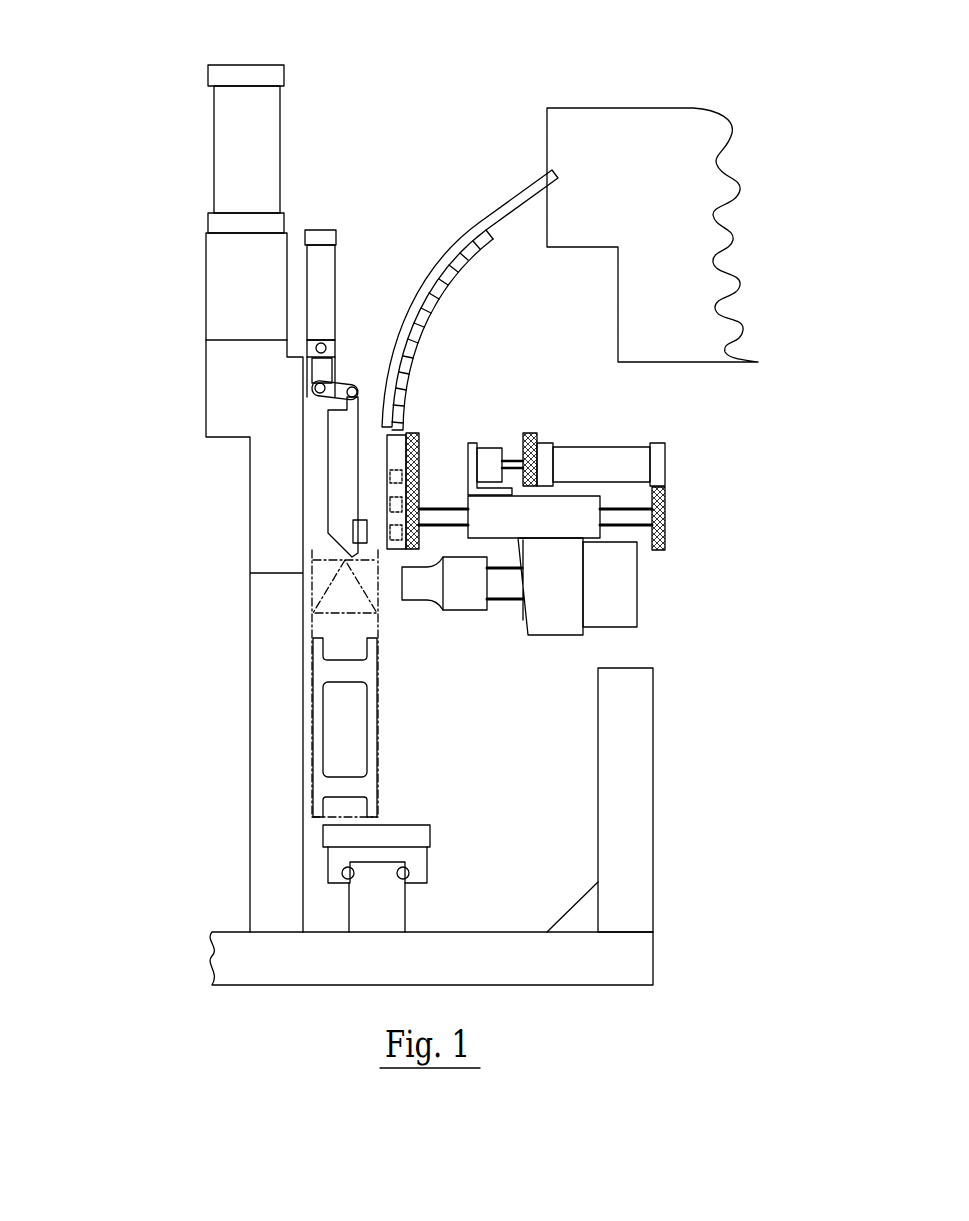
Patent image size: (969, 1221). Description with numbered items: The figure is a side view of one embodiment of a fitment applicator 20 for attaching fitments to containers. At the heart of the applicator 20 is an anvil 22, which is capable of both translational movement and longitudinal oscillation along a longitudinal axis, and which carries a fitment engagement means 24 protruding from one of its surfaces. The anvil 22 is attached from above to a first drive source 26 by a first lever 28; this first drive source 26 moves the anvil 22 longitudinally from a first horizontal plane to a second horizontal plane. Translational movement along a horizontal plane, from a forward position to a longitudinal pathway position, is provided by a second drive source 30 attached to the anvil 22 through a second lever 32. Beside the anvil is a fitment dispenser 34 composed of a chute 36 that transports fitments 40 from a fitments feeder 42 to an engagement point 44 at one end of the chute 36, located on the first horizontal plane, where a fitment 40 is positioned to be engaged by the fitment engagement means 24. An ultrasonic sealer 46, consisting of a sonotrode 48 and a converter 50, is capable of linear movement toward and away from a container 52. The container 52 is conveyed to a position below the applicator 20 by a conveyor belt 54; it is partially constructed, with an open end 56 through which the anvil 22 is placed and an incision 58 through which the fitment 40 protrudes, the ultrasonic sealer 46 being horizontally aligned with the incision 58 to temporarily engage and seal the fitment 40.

The fitment applicator 20 is at (140, 252).
The anvil 22 is at (328, 467).
The fitment engagement means 24 is at (367, 523).
The first drive source 26 is at (333, 260).
The first lever 28 is at (313, 370).
The second drive source 30 is at (615, 445).
The second lever 32 is at (508, 452).
The fitment dispenser 34 is at (489, 138).
The chute 36 is at (422, 285).
The fitment 40 is at (475, 250).
The fitments feeder 42 is at (600, 108).
The engagement point 44 is at (398, 537).
The ultrasonic sealer 46 is at (544, 686).
The sonotrode 48 is at (465, 610).
The converter 50 is at (637, 590).
The container 52 is at (315, 602).
The conveyor belt 54 is at (418, 786).
The open end 56 is at (326, 550).
The incision 58 is at (380, 583).